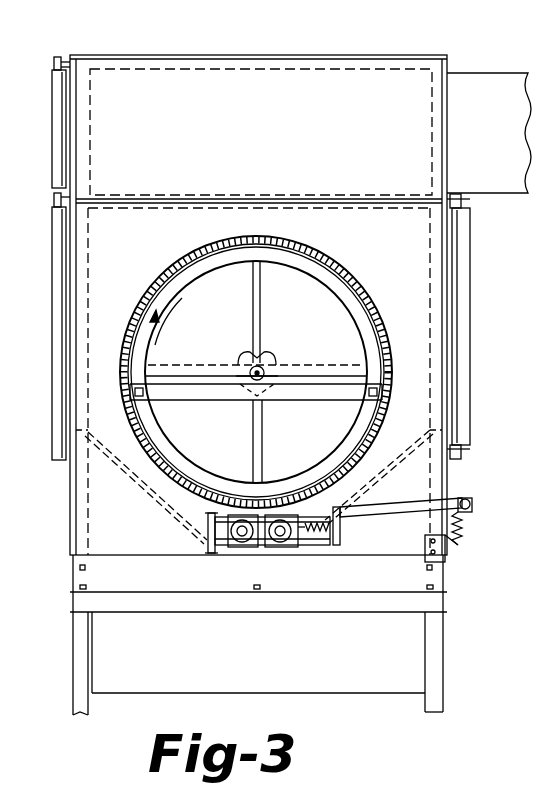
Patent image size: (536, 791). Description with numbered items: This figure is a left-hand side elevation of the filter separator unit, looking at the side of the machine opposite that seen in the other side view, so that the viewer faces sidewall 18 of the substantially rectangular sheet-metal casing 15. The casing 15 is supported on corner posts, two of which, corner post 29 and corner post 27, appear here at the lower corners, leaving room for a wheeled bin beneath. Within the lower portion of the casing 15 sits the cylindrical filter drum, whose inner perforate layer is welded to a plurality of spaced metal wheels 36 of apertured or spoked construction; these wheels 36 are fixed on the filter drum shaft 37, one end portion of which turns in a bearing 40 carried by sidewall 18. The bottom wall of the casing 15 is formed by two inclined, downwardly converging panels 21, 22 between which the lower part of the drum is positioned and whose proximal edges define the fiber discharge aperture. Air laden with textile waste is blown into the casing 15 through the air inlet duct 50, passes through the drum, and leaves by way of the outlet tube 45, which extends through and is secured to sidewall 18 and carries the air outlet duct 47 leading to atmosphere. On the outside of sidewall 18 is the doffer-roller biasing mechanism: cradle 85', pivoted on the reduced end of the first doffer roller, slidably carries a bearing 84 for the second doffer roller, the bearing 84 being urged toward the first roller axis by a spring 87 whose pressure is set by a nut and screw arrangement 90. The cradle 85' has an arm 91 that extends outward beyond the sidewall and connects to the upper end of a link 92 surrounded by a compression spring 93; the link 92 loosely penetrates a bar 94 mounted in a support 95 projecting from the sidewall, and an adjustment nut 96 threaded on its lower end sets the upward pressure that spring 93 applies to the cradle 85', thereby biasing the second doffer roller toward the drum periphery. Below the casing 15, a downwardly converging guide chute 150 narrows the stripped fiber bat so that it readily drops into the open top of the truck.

The cabinet or boxlike casing 15 is at (217, 50).
The air inlet duct 50 is at (506, 145).
The sidewall 18 is at (147, 249).
The inclined panel 22 is at (150, 492).
The inclined panel 21 is at (383, 470).
The air outlet duct or trunking 47 is at (330, 262).
The outlet tube 45 is at (344, 288).
The metal wheels 36 is at (190, 268).
The bearing 40 is at (243, 360).
The filter drum shaft 37 is at (262, 364).
The spring 87 is at (315, 546).
The cradle 85' is at (224, 549).
The bearing 84 is at (300, 546).
The nut and screw arrangement 90 is at (340, 528).
The arm 91 is at (400, 514).
The link 92 is at (472, 502).
The compression spring 93 is at (462, 522).
The bar 94 is at (455, 540).
The adjustment nut 96 is at (444, 548).
The support 95 is at (441, 560).
The guide chute 150 is at (300, 671).
The corner post 29 is at (80, 664).
The corner post 27 is at (443, 659).